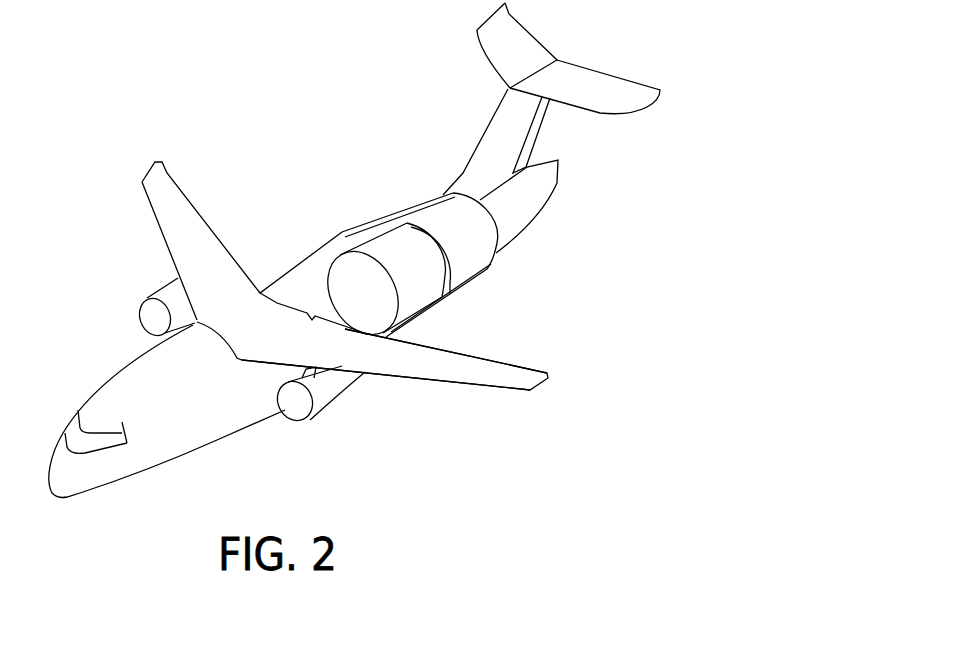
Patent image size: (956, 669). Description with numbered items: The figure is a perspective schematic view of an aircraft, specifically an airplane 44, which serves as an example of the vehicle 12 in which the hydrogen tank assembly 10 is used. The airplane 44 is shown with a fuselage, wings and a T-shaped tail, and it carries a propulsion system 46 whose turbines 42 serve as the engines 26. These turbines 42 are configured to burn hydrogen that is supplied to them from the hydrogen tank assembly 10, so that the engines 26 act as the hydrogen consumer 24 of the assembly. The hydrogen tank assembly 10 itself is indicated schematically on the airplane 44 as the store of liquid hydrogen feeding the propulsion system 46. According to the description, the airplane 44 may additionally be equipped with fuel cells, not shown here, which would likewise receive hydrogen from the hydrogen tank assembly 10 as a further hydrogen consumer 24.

The hydrogen tank assembly 10 is at (428, 221).
The vehicle 12 is at (528, 304).
The hydrogen consumer 24 is at (311, 428).
The engine 26 is at (391, 407).
The turbine 42 is at (337, 392).
The airplane 44 is at (409, 466).
The propulsion system 46 is at (331, 228).